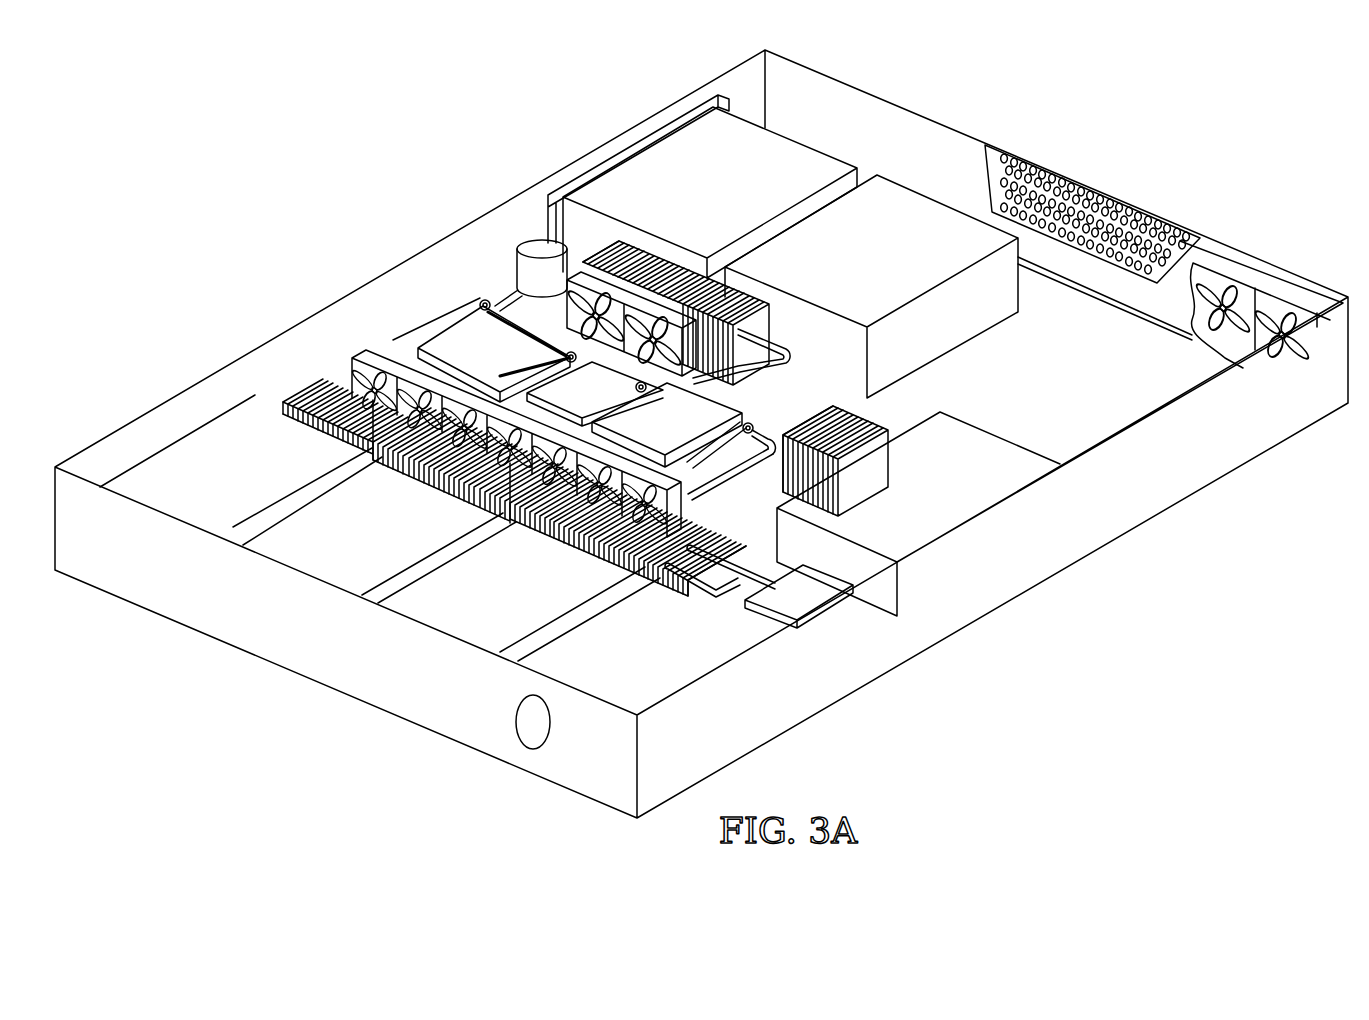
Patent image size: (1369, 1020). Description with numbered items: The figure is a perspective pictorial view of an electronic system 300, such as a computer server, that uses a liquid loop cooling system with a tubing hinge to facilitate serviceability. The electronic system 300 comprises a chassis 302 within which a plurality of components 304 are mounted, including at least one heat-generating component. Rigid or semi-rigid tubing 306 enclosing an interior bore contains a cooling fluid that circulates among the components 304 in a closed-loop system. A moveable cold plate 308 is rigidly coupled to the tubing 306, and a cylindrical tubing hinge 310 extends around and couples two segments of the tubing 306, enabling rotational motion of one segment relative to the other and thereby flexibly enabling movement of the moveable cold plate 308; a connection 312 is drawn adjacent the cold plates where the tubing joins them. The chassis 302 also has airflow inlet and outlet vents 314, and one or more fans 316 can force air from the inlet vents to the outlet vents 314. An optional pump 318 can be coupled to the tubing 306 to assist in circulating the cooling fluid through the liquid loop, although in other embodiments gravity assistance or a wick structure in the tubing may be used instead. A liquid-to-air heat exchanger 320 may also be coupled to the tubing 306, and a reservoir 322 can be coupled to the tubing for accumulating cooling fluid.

The electronic system 300 is at (1100, 644).
The chassis 302 is at (1130, 517).
The components 304 is at (687, 455).
The tubing 306 is at (722, 485).
The moveable cold plate 308 is at (627, 422).
The cylindrical tubing hinge 310 is at (568, 352).
The conduit connector 312 is at (710, 436).
The airflow inlet and outlet vents 314 is at (1078, 205).
The fans 316 is at (570, 310).
The pump 318 is at (810, 587).
The liquid-to-air heat exchanger 320 is at (678, 275).
The reservoir 322 is at (522, 262).